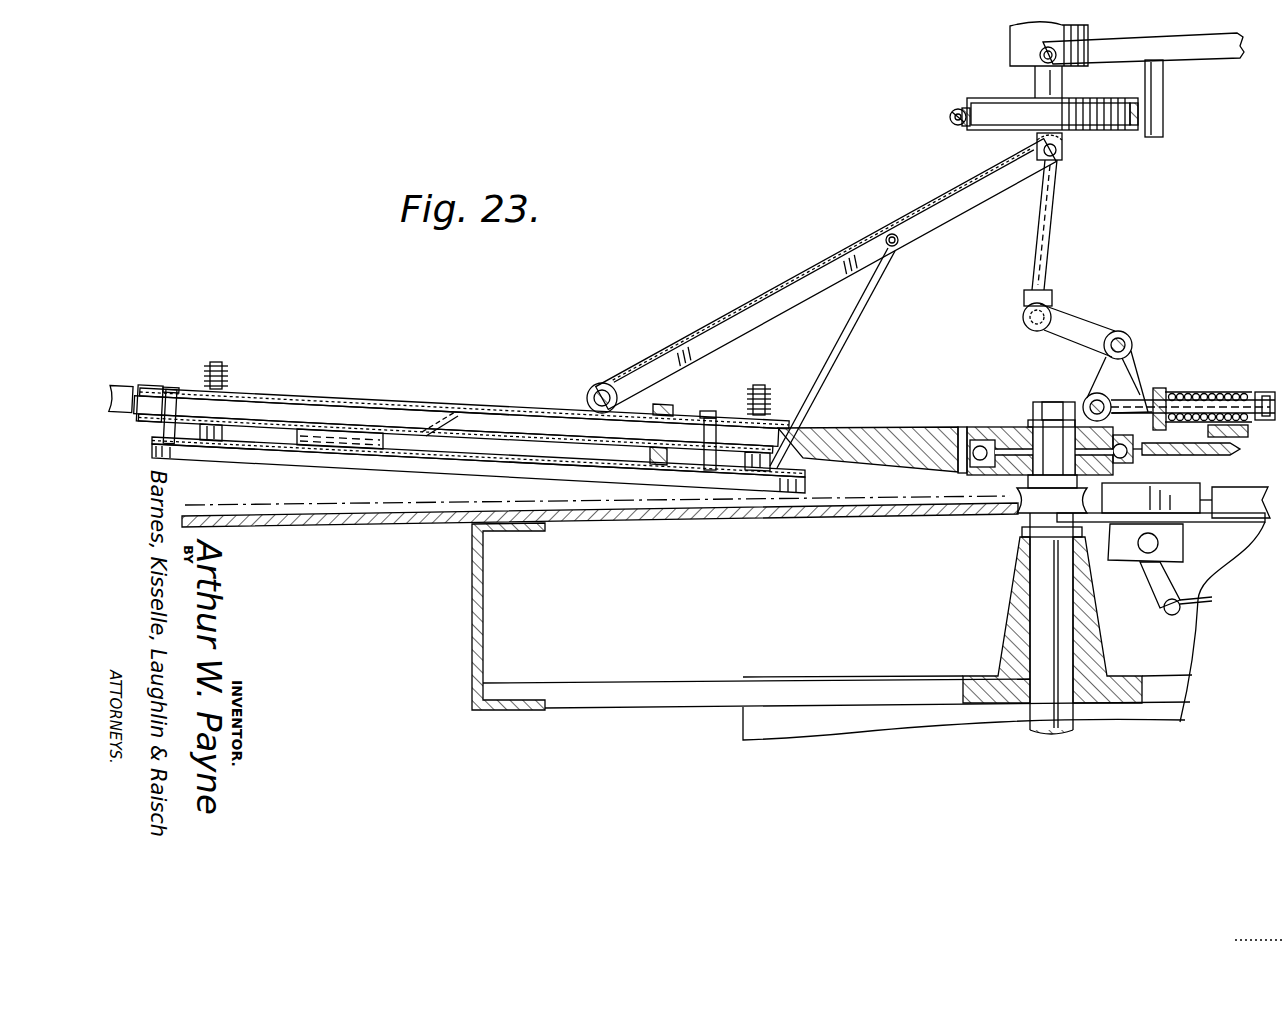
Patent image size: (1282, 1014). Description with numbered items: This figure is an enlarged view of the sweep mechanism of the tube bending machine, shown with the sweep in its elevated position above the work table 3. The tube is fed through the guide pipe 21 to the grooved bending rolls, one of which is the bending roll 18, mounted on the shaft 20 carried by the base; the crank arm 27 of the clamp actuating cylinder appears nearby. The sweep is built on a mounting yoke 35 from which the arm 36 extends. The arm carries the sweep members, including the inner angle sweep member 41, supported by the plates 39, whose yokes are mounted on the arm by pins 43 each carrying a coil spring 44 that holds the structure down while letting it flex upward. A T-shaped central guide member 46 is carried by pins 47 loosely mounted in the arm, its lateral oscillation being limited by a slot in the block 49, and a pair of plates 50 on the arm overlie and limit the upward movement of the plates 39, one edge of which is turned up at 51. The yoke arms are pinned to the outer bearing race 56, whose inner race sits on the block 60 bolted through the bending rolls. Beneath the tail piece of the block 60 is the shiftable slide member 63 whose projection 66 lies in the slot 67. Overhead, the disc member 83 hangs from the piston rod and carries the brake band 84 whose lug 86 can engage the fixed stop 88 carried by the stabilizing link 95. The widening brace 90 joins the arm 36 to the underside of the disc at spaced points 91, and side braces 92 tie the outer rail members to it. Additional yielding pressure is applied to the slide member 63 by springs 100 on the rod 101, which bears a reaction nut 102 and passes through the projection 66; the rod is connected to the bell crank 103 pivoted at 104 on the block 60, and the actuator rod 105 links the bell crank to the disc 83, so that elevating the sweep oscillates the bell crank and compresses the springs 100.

The work table 3 is at (803, 514).
The bending roll 18 is at (1022, 510).
The shaft 20 is at (1040, 605).
The guide pipe 21 is at (1240, 466).
The crank arm 27 is at (1148, 588).
The mounting yoke 35 is at (952, 426).
The arm 36 is at (522, 410).
The plates 39 is at (270, 458).
The inner angle sweep member 41 is at (480, 472).
The pins 43 is at (220, 360).
The coil spring 44 is at (228, 374).
The central guide member 46 is at (336, 470).
The pins 47 is at (726, 416).
The block 49 is at (668, 406).
The plates 50 is at (358, 400).
The upturned edge 51 is at (430, 412).
The outer bearing race 56 is at (960, 468).
The block 60 is at (1012, 426).
The shiftable slide member 63 is at (1240, 448).
The projection 66 is at (1157, 390).
The slot 67 is at (1183, 400).
The disc member 83 is at (984, 100).
The brake band 84 is at (950, 117).
The lug 86 is at (958, 126).
The fixed stop 88 is at (1163, 116).
The angularly disposed brace 90 is at (948, 212).
The spaced connection points 91 is at (1063, 150).
The side braces 92 is at (852, 318).
The stabilizing link 95 is at (1180, 58).
The springs 100 is at (1244, 388).
The rod 101 is at (1270, 430).
The reaction nut 102 is at (1272, 380).
The bell crank 103 is at (1138, 364).
The pivot 104 is at (1131, 340).
The actuator rod 105 is at (1057, 206).